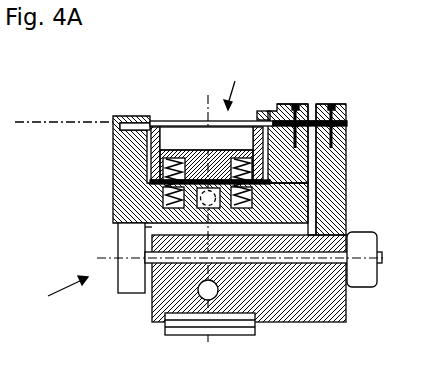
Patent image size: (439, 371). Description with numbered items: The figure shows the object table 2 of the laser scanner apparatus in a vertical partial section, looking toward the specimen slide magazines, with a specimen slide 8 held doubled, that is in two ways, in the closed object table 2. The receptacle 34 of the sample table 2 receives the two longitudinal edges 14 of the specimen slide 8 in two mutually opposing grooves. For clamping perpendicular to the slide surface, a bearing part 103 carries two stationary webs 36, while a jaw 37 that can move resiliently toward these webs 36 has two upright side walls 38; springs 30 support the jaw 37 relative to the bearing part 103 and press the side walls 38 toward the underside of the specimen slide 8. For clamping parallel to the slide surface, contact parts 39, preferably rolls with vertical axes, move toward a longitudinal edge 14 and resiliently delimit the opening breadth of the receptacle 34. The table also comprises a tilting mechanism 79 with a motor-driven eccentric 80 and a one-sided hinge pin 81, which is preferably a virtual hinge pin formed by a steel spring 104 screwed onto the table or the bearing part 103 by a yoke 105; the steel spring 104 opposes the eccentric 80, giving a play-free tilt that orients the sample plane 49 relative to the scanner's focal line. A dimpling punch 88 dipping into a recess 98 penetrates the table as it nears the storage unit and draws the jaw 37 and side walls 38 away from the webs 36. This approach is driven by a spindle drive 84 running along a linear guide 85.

The object table 2 is at (218, 213).
The specimen slide 8 is at (192, 121).
The longitudinal edges 14 is at (135, 117).
The springs 30 is at (218, 169).
The receptacle 34 is at (236, 84).
The stationary webs 36 is at (153, 125).
The jaw 37 is at (113, 170).
The upright side walls 38 is at (113, 150).
The contact parts 39 is at (120, 117).
The sample plane 49 is at (62, 123).
The tilting mechanism 79 is at (51, 298).
The eccentric 80 is at (133, 265).
The hinge pin 81 is at (313, 148).
The spindle drive 84 is at (153, 313).
The linear guide 85 is at (190, 330).
The dimpling punch 88 is at (143, 229).
The recess 98 is at (117, 228).
The bearing part 103 is at (347, 188).
The steel spring 104 is at (347, 124).
The yoke 105 is at (344, 104).